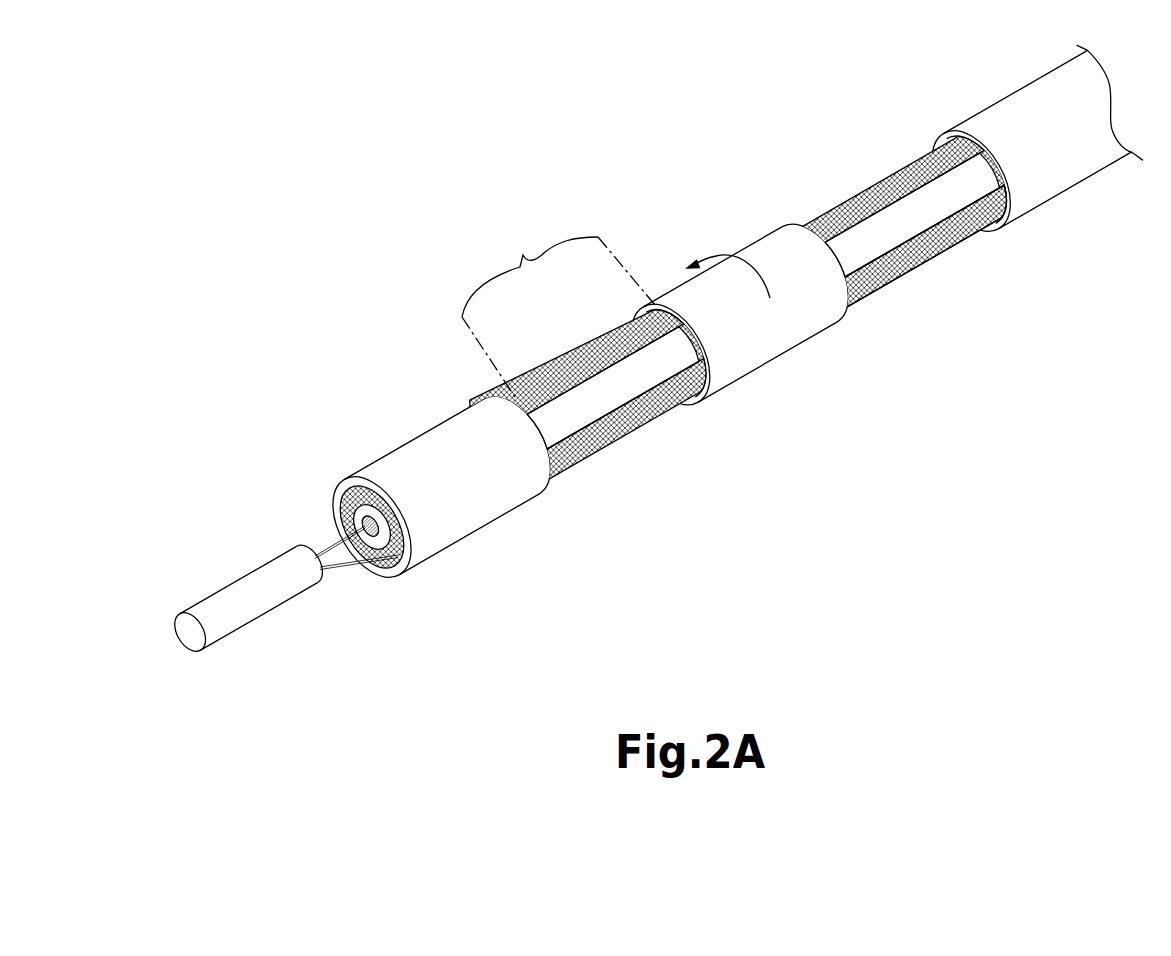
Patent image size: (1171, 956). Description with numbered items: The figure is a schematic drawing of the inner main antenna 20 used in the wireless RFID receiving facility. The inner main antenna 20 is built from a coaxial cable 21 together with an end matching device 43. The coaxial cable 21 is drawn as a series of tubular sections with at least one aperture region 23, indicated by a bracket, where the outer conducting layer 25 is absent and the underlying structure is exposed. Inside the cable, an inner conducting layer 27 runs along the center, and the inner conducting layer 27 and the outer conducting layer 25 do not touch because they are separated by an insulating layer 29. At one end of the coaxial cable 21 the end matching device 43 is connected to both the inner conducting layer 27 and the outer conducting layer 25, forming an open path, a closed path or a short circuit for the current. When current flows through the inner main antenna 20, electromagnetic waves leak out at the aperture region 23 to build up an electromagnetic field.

The inner main antenna 20 is at (396, 239).
The coaxial cable 21 is at (393, 457).
The aperture region 23 is at (558, 310).
The outer conducting layer 25 is at (873, 280).
The inner conducting layer 27 is at (376, 537).
The insulating layer 29 is at (923, 258).
The end matching device 43 is at (237, 593).